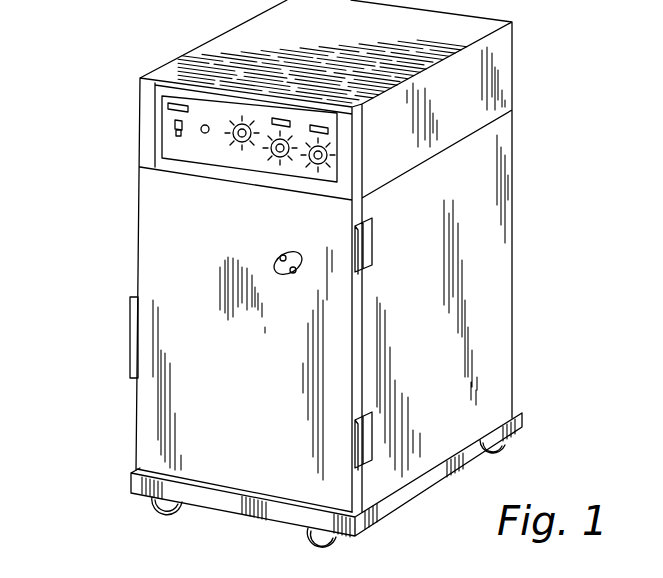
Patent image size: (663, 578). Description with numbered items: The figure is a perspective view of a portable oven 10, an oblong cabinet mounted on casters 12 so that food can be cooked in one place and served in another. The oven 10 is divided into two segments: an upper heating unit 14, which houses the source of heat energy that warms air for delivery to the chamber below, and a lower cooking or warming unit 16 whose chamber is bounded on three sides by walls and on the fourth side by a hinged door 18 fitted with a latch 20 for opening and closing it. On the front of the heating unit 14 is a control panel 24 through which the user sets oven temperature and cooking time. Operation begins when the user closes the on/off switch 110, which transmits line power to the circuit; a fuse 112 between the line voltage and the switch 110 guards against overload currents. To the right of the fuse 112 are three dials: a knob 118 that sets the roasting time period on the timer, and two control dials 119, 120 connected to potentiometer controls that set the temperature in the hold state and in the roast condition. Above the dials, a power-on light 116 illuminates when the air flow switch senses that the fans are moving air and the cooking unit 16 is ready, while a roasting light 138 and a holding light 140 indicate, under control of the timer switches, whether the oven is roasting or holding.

The portable oven 10 is at (90, 243).
The casters 12 is at (170, 502).
The heating unit 14 is at (514, 70).
The cooking or warming unit 16 is at (512, 240).
The hinged door 18 is at (256, 347).
The latch 20 is at (132, 338).
The control panel 24 is at (218, 114).
The on/off switch 110 is at (178, 138).
The fuse 112 is at (205, 134).
The power-on light 116 is at (166, 107).
The knob 118 is at (242, 143).
The control dial 119 is at (282, 158).
The control dial 120 is at (340, 141).
The roasting light 138 is at (320, 122).
The holding light 140 is at (279, 118).